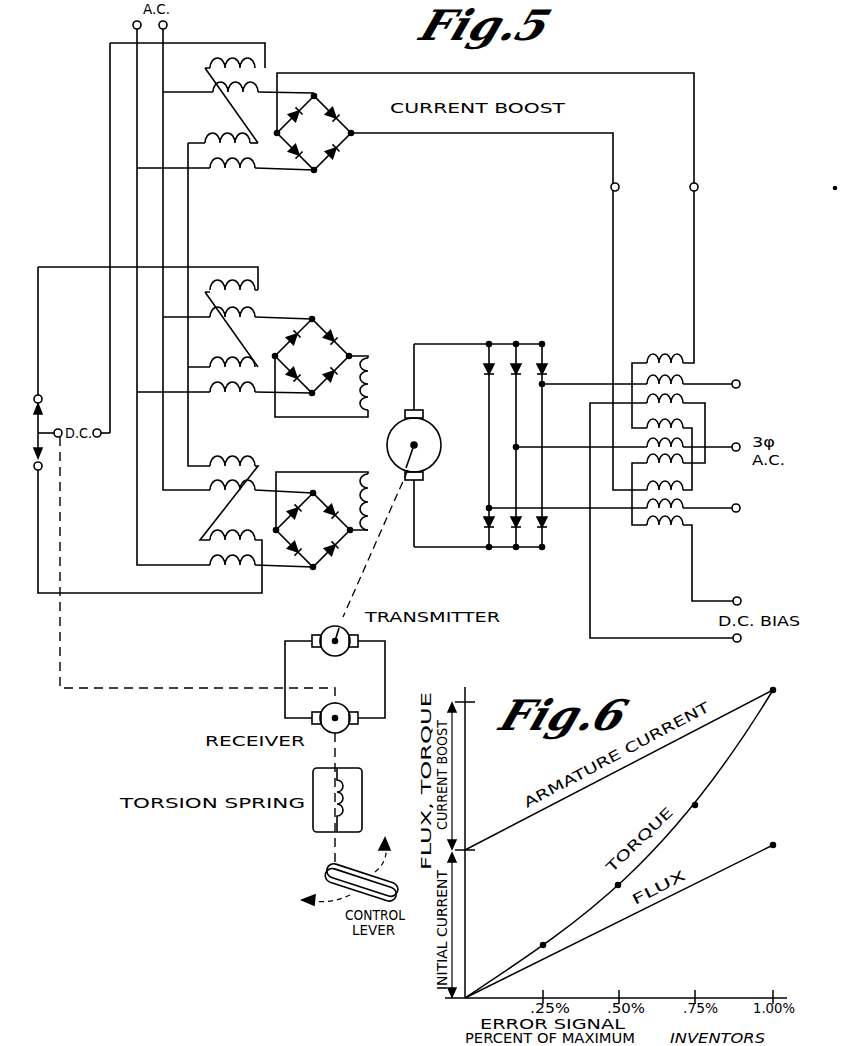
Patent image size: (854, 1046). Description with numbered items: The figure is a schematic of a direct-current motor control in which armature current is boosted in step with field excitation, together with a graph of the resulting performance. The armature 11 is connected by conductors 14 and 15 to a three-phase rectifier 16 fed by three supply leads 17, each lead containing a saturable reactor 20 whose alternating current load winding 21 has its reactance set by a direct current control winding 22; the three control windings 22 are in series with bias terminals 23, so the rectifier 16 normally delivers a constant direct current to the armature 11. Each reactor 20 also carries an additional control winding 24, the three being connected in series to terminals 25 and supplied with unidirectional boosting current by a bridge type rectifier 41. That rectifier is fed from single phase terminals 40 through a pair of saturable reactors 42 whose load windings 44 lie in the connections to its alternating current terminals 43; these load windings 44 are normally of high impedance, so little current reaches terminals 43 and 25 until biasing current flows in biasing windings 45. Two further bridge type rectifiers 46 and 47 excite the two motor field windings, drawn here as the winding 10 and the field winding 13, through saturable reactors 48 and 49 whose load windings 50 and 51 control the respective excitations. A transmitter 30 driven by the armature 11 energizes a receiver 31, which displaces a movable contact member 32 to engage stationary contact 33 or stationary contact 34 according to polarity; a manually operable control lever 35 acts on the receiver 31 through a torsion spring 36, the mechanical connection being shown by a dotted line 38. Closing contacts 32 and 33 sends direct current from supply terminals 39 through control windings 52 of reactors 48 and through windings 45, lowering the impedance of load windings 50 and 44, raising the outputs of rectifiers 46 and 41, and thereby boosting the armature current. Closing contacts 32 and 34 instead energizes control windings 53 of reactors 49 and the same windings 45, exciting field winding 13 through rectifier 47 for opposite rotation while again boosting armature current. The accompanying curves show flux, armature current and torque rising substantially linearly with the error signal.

The field winding (current boost) 10 is at (372, 378).
The armature 11 is at (440, 435).
The field winding 13 is at (375, 485).
The conductor 14 is at (448, 344).
The conductor 15 is at (440, 548).
The three-phase rectifier 16 is at (510, 452).
The supply leads 17 is at (740, 388).
The saturable reactor 20 is at (695, 362).
The alternating current load winding 21 is at (695, 384).
The direct current control winding 22 is at (690, 405).
The terminals 23 is at (742, 598).
The control winding 24 is at (665, 360).
The terminals 25 is at (620, 188).
The transmitter 30 is at (345, 652).
The receiver 31 is at (375, 690).
The movable contact member 32 is at (44, 428).
The stationary contact 33 is at (42, 397).
The stationary contact 34 is at (34, 468).
The control lever 35 is at (360, 895).
The torsion spring 36 is at (320, 815).
The dotted line 38 is at (95, 688).
The direct current supply terminals 39 is at (101, 437).
The terminals 40 is at (133, 25).
The bridge type rectifier 41 is at (350, 135).
The saturable reactor 42 is at (255, 80).
The alternating current terminals 43 is at (330, 93).
The alternating current load winding 44 is at (232, 190).
The biasing winding 45 is at (262, 66).
The bridge type rectifier 46 is at (325, 355).
The bridge type rectifier 47 is at (325, 545).
The saturable reactor 48 is at (262, 300).
The saturable reactor 49 is at (262, 470).
The alternating current load winding 50 is at (238, 322).
The alternating current load winding 51 is at (228, 500).
The direct current control winding 52 is at (218, 285).
The control winding 53 is at (262, 474).